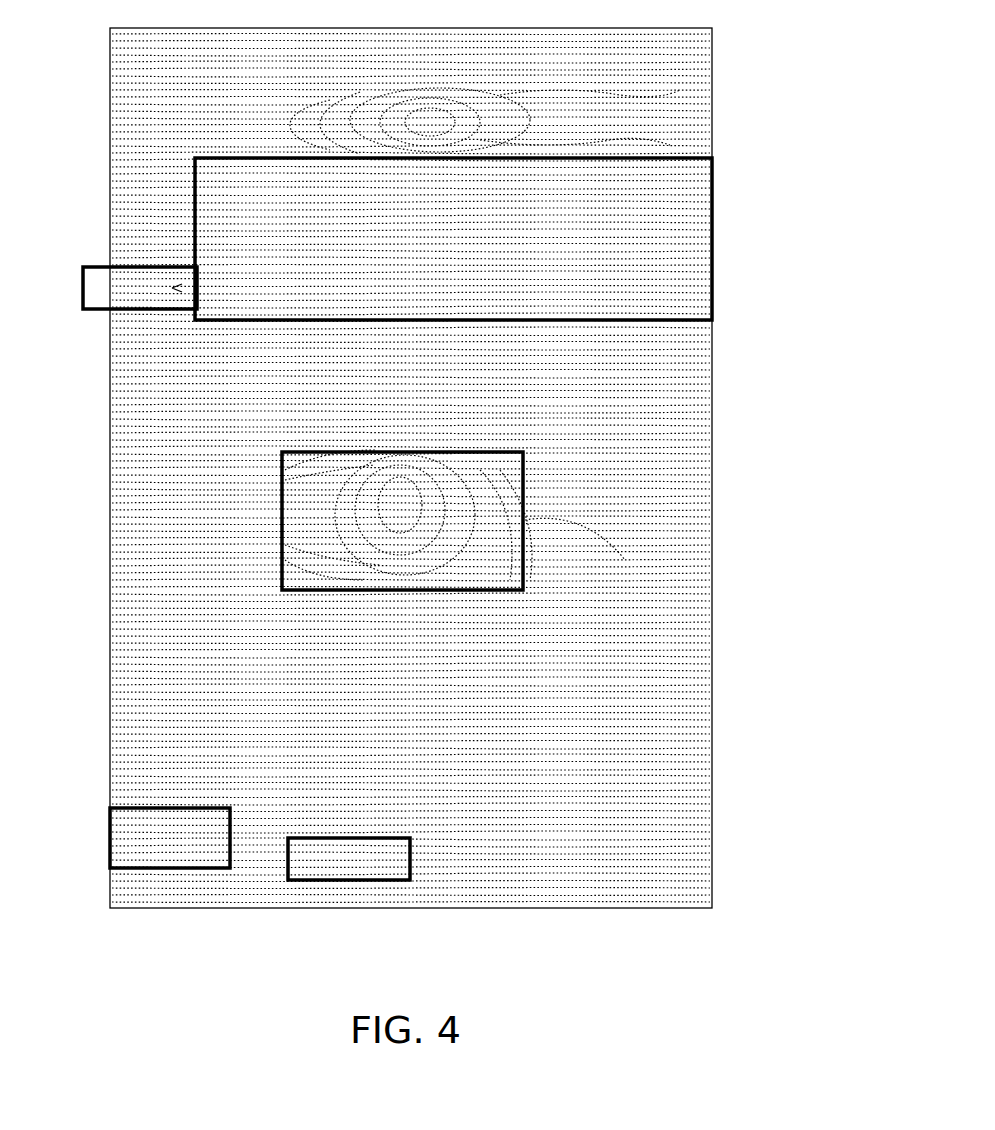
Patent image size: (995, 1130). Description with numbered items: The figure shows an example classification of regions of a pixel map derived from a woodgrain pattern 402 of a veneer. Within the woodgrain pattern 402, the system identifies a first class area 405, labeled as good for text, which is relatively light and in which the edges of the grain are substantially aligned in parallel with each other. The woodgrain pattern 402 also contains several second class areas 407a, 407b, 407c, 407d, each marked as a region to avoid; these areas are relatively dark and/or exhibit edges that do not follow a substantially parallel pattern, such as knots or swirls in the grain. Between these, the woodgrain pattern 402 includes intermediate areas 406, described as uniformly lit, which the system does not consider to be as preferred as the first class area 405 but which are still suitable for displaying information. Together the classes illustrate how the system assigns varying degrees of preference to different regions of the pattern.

The woodgrain pattern 402 is at (788, 34).
The first class area 405 is at (705, 228).
The intermediate area 406 is at (290, 354).
The second class area 407a is at (83, 283).
The second class area 407b is at (510, 543).
The second class area 407c is at (110, 842).
The second class area 407d is at (412, 862).